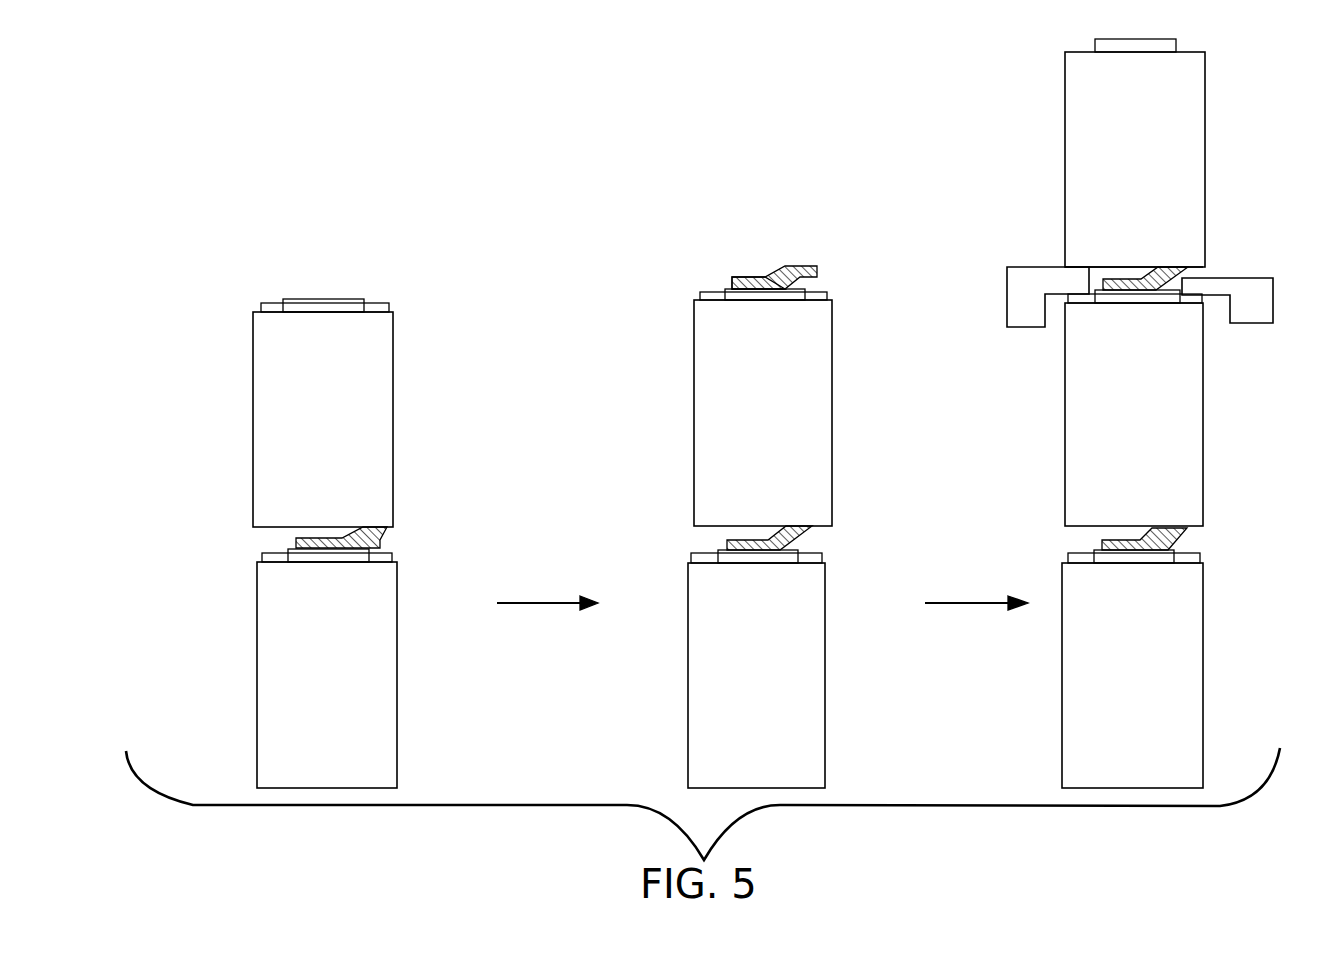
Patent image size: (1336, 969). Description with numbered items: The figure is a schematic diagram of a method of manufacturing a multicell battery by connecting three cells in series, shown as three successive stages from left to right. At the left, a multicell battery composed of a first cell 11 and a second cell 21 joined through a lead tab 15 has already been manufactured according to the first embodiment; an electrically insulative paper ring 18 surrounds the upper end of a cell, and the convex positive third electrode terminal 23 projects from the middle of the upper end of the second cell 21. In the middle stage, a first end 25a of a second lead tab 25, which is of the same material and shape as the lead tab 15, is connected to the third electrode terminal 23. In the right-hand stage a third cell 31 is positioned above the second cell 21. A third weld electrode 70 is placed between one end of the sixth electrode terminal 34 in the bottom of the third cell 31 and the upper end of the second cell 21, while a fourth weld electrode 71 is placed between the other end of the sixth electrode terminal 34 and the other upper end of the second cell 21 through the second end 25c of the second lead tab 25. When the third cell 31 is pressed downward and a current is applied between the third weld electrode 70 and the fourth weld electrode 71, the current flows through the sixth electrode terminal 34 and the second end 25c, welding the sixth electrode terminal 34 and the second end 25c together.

The first cell 11 is at (365, 695).
The lead tab 15 is at (380, 538).
The paper ring 18 is at (390, 306).
The second cell 21 is at (365, 428).
The third electrode terminal 23 is at (345, 305).
The second lead tab 25 is at (803, 272).
The first end of second lead tab 25a is at (748, 280).
The second end of second lead tab 25c is at (1177, 267).
The third cell 31 is at (1178, 163).
The sixth electrode terminal 34 is at (1100, 267).
The third weld electrode 70 is at (1028, 297).
The fourth weld electrode 71 is at (1265, 306).